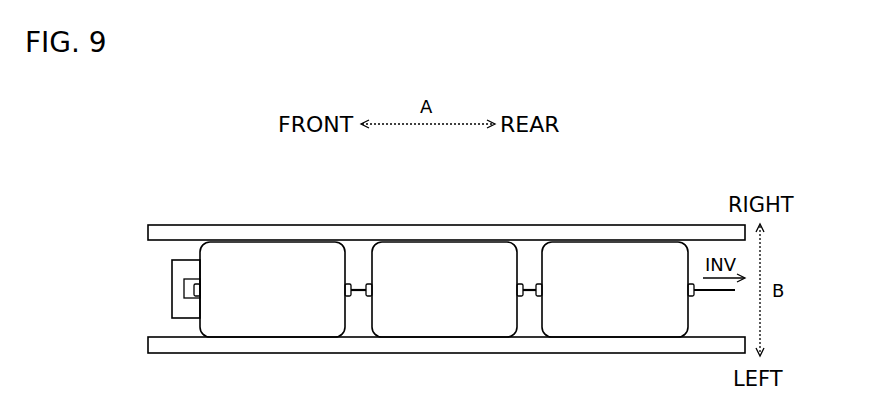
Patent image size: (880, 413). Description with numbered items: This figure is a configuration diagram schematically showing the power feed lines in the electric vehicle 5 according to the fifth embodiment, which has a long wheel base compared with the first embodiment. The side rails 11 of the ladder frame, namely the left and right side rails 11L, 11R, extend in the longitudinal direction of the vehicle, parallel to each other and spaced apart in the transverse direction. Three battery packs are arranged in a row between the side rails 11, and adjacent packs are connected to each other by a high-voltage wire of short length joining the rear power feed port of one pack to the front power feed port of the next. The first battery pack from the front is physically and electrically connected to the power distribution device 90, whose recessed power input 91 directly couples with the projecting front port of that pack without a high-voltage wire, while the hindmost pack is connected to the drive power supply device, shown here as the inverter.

The electric vehicle 5 is at (137, 172).
The side rails 11 is at (117, 253).
The right side rail 11R is at (158, 238).
The left side rail 11L is at (158, 345).
The power distribution device 90 is at (179, 272).
The power input 91 is at (190, 300).